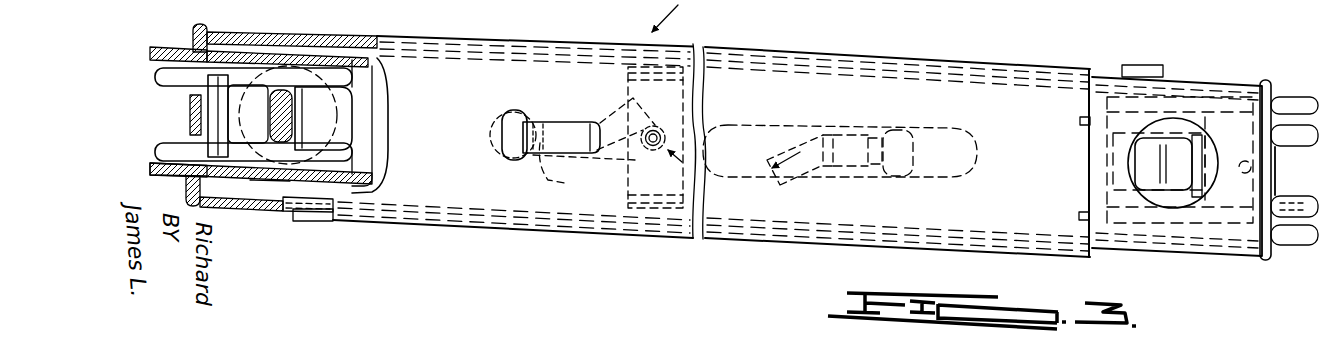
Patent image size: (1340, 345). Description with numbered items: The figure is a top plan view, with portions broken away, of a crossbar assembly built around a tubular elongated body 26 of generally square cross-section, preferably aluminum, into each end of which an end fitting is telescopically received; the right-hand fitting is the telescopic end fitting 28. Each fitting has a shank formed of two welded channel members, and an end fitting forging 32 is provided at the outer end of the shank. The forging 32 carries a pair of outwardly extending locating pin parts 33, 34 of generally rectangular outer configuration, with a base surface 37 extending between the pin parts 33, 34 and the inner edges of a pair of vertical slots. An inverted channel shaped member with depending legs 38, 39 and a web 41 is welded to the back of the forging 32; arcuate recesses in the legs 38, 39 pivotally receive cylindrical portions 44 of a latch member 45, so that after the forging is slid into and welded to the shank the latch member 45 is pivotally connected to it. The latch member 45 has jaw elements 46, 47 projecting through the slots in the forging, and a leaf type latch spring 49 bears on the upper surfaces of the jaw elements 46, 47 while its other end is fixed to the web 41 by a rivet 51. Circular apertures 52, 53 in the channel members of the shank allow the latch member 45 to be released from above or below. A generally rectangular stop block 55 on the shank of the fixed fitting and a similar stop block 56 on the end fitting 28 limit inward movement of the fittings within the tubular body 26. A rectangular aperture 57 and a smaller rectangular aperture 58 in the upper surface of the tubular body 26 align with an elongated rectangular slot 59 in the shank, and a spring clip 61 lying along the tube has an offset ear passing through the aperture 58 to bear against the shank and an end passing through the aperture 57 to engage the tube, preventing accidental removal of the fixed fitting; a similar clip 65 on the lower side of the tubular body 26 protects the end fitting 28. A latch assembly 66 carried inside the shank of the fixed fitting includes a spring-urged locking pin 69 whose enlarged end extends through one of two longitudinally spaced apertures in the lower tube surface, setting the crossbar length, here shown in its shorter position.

The tubular elongated body 26 is at (547, 37).
The end fitting 28 is at (1207, 76).
The end fitting forging 32 is at (182, 43).
The locating pin part 33 is at (150, 54).
The locating pin part 34 is at (150, 172).
The base surface 37 is at (208, 124).
The depending leg 38 is at (372, 67).
The depending leg 39 is at (362, 173).
The web 41 is at (267, 33).
The cylindrical portion 44 is at (357, 48).
The latch member 45 is at (362, 78).
The jaw element 46 is at (155, 78).
The jaw element 47 is at (153, 145).
The latch spring 49 is at (196, 114).
The rivet 51 is at (1240, 125).
The circular aperture 52 is at (1133, 152).
The circular aperture 53 is at (254, 182).
The stop block 55 is at (302, 222).
The stop block 56 is at (1140, 64).
The rectangular aperture 57 is at (517, 110).
The rectangular aperture 58 is at (600, 122).
The rectangular slot 59 is at (552, 180).
The spring clip 61 is at (553, 124).
The clip 65 is at (852, 134).
The latch assembly 66 is at (758, 178).
The locking pin 69 is at (652, 94).